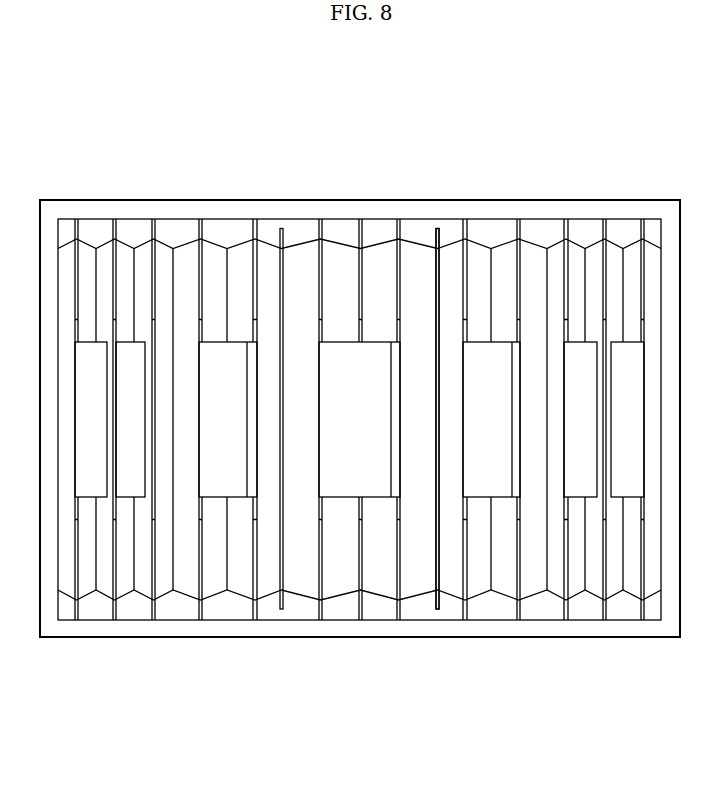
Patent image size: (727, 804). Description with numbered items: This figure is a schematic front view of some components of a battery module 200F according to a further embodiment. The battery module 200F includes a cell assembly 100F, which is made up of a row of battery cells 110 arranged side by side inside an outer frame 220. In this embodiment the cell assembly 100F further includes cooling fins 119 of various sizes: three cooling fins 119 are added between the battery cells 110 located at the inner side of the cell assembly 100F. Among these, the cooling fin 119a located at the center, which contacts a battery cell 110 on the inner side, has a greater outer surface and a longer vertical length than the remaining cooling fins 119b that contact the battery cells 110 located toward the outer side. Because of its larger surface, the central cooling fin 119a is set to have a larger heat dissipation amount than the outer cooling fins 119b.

The battery module 200F is at (169, 82).
The housing 220 is at (193, 199).
The cell assembly 100F is at (225, 236).
The battery cell 110 is at (143, 240).
The cooling fin 119 is at (354, 481).
The cooling fin 119a is at (357, 610).
The cooling fin 119b is at (455, 687).